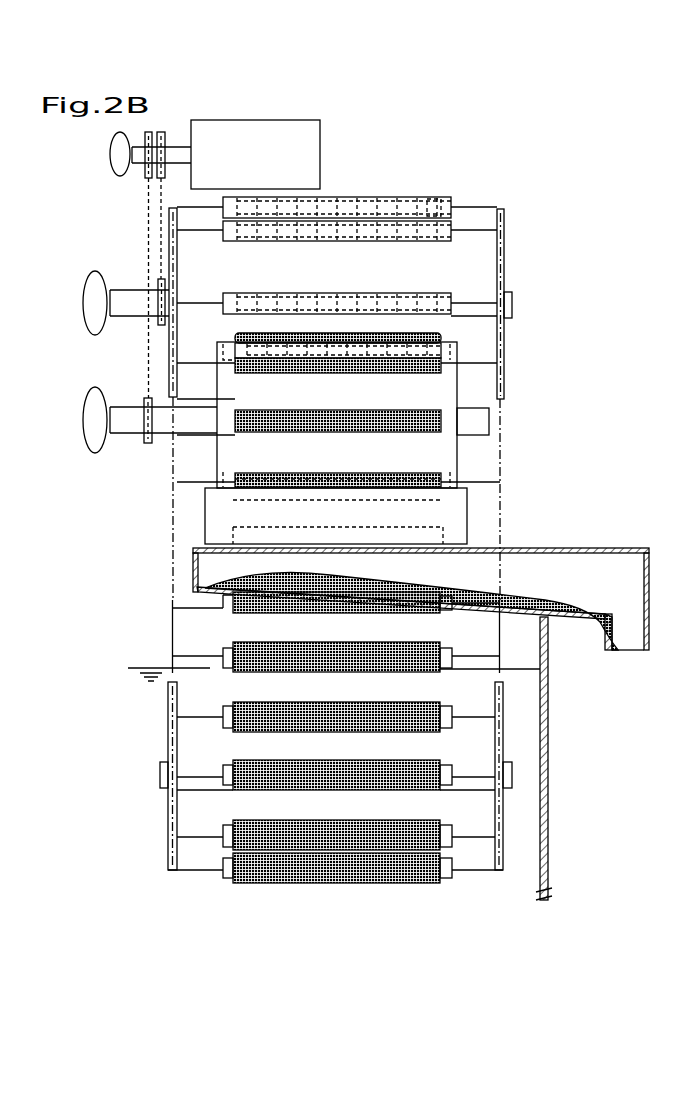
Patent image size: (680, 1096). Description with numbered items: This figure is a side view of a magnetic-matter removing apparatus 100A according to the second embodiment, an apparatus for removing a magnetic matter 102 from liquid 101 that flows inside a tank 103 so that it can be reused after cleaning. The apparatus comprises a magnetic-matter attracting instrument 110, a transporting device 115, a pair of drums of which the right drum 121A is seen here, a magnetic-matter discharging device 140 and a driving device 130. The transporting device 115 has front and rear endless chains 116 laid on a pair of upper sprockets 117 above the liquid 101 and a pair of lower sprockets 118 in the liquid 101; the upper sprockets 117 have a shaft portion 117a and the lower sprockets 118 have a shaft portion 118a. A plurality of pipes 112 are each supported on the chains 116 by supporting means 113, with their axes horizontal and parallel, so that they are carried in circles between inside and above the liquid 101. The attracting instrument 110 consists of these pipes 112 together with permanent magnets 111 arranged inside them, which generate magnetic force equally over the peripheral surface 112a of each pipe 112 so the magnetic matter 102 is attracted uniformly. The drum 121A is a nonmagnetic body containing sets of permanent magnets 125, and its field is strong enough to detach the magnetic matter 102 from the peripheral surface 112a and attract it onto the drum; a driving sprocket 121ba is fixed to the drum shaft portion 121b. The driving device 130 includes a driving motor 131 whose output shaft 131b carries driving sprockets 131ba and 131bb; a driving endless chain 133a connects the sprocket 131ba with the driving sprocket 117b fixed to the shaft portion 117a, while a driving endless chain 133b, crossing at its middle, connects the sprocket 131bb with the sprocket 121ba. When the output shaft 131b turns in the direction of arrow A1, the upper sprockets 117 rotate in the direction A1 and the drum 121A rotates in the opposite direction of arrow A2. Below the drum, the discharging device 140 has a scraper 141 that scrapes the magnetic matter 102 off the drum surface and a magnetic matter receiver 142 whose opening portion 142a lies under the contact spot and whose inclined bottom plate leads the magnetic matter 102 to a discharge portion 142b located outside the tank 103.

The magnetic-matter removing apparatus 100A is at (668, 110).
The magnetic-matter attracting instrument 110 is at (470, 140).
The driving device 130 is at (134, 119).
The driving motor 131 is at (293, 117).
The output shaft 131b is at (176, 143).
The driving sprocket 131ba is at (162, 131).
The driving sprocket 131bb is at (141, 174).
The driving endless chain 133a is at (160, 268).
The driving endless chain 133b is at (147, 229).
The transporting device 115 is at (368, 132).
The upper sprockets 117 is at (177, 263).
The shaft portion 117a is at (128, 317).
The driving sprocket 117b is at (160, 326).
The pipes 112 is at (448, 194).
The peripheral surface 112a is at (387, 197).
The permanent magnets 111 is at (431, 205).
The arrow A1 is at (108, 160).
The arrow A2 is at (86, 438).
The shaft portion 121b is at (125, 437).
The driving sprocket 121ba is at (148, 445).
The drum 121A is at (466, 459).
The permanent magnets 125 is at (430, 351).
The magnetic matter 102 is at (432, 420).
The scraper 141 is at (204, 513).
The endless chains 116 is at (500, 522).
The magnetic-matter discharging device 140 is at (580, 491).
The magnetic matter receiver 142 is at (610, 542).
The opening portion 142a is at (476, 553).
The discharge portion 142b is at (633, 652).
The tank 103 is at (548, 764).
The liquid 101 is at (519, 682).
The supporting means 113 is at (196, 872).
The lower sprockets 118 is at (168, 812).
The shaft portion 118a is at (160, 776).